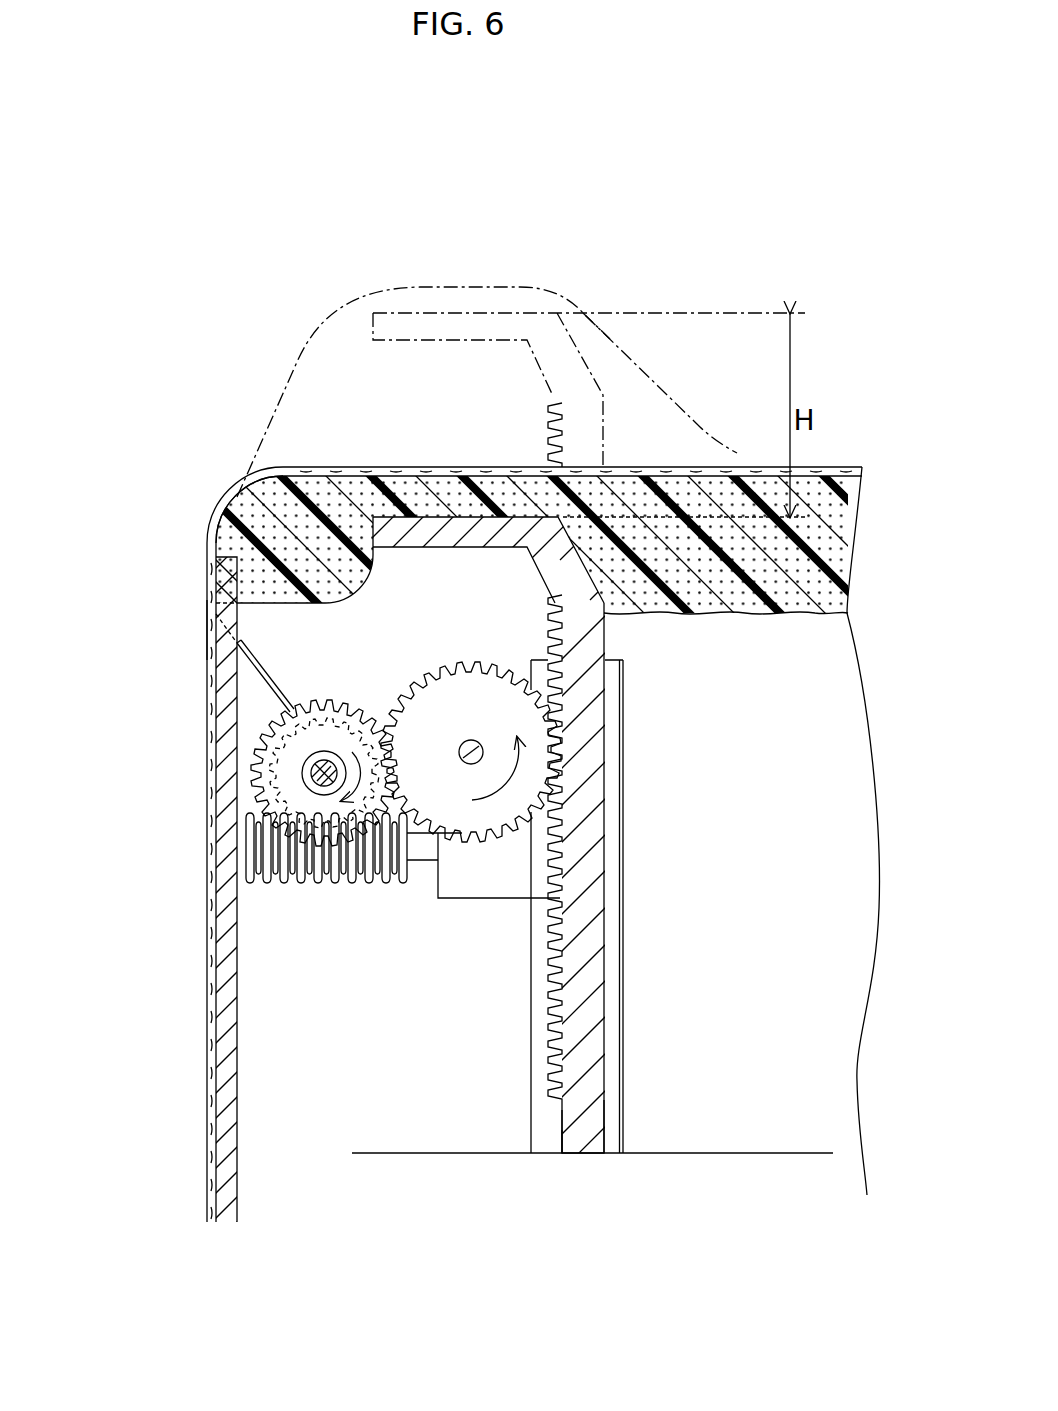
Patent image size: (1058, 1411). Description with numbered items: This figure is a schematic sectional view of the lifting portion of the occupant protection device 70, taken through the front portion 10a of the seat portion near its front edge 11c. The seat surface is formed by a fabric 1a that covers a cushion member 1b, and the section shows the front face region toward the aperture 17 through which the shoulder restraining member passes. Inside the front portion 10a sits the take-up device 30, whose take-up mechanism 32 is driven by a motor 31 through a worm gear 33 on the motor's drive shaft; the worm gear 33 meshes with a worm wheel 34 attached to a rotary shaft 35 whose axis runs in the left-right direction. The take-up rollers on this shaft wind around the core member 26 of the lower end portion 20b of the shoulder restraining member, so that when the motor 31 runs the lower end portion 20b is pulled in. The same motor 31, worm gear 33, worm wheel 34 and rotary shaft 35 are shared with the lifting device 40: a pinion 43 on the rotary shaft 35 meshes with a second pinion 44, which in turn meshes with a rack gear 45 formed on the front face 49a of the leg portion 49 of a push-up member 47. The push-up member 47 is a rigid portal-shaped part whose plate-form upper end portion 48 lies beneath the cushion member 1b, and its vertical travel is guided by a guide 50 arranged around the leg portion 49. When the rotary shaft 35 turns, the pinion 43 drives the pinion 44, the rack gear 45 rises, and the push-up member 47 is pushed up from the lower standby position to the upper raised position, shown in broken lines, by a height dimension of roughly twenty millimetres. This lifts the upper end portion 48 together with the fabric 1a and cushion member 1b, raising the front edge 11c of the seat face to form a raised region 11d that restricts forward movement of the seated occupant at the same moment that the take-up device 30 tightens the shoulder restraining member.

The fabric 1a is at (833, 467).
The cushion member 1b is at (848, 611).
The front portion 10a is at (243, 416).
The front edge 11c is at (196, 511).
The raised region 11d is at (543, 305).
The aperture 17 is at (196, 636).
The lower end portion 20b is at (258, 677).
The core member 26 is at (160, 663).
The take-up device 30 is at (232, 908).
The motor 31 is at (460, 886).
The take-up mechanism 32 is at (300, 900).
The worm gear 33 is at (250, 849).
The worm wheel 34 is at (258, 786).
The rotary shaft 35 is at (305, 763).
The lifting device 40 is at (567, 927).
The pinion 43 is at (352, 712).
The pinion 44 is at (538, 747).
The rack gear 45 is at (560, 1043).
The push-up member 47 is at (547, 381).
The upper end portion 48 is at (468, 332).
The leg portion 49 is at (583, 1125).
The front face 49a is at (557, 1140).
The guide 50 is at (625, 933).
The occupant protection device 70 is at (389, 932).